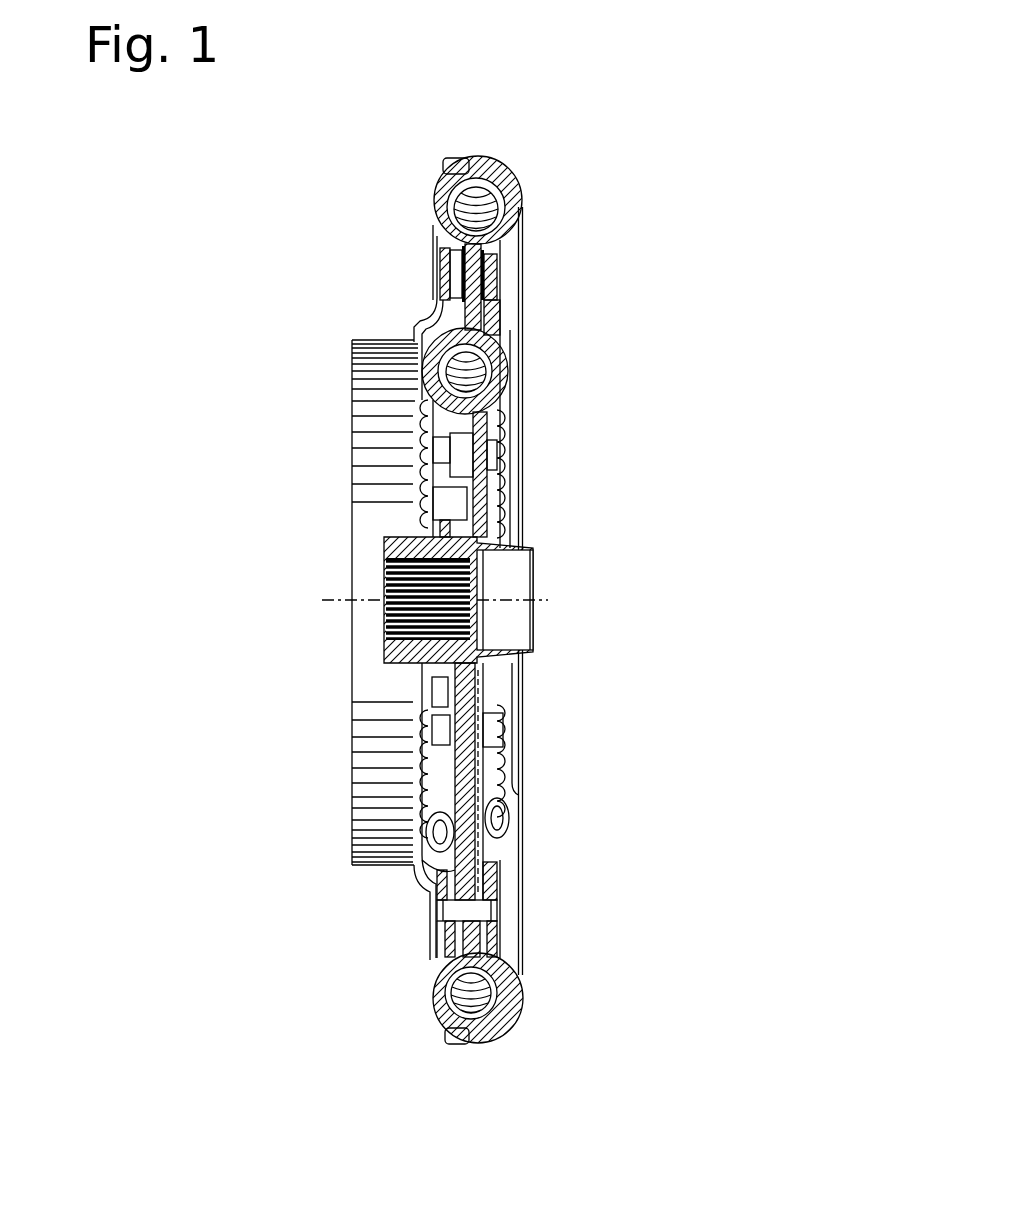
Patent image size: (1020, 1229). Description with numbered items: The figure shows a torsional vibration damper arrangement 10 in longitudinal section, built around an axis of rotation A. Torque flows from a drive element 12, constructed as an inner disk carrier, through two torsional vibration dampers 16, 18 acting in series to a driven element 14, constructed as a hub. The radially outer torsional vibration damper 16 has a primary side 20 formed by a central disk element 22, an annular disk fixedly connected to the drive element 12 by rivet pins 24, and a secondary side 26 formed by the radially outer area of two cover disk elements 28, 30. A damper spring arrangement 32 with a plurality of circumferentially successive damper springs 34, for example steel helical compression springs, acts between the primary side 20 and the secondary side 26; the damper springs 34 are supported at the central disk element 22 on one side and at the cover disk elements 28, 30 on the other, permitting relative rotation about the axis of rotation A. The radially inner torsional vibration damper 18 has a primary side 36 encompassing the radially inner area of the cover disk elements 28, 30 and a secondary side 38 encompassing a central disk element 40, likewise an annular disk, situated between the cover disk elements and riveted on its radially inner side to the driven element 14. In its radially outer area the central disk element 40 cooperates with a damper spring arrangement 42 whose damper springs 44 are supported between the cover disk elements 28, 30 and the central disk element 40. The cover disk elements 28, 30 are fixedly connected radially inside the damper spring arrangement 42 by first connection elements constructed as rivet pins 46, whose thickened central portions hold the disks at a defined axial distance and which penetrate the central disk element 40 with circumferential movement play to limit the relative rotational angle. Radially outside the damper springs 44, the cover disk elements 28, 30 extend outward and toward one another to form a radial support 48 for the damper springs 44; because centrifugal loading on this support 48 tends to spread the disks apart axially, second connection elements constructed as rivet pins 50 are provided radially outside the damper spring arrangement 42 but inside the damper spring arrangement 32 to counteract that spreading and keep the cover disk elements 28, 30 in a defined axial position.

The torsional vibration damper arrangement 10 is at (637, 120).
The drive element 12 is at (352, 382).
The driven element 14 is at (535, 583).
The radially outer torsional vibration damper 16 is at (597, 188).
The radially inner torsional vibration damper 18 is at (604, 387).
The primary side 20 is at (421, 260).
The central disk element 22 is at (478, 256).
The rivet pins 24 is at (450, 283).
The secondary side 26 is at (493, 128).
The cover disk element 28 is at (440, 224).
The cover disk element 30 is at (492, 282).
The damper spring arrangement 32 is at (422, 168).
The damper springs 34 is at (493, 167).
The primary side 36 is at (552, 410).
The secondary side 38 is at (452, 426).
The central disk element 40 is at (482, 491).
The damper spring arrangement 42 is at (518, 353).
The damper springs 44 is at (445, 405).
The rivet pins 46 is at (462, 462).
The radial support 48 is at (422, 317).
The rivet pins 50 is at (490, 908).
The axis of rotation A is at (372, 600).